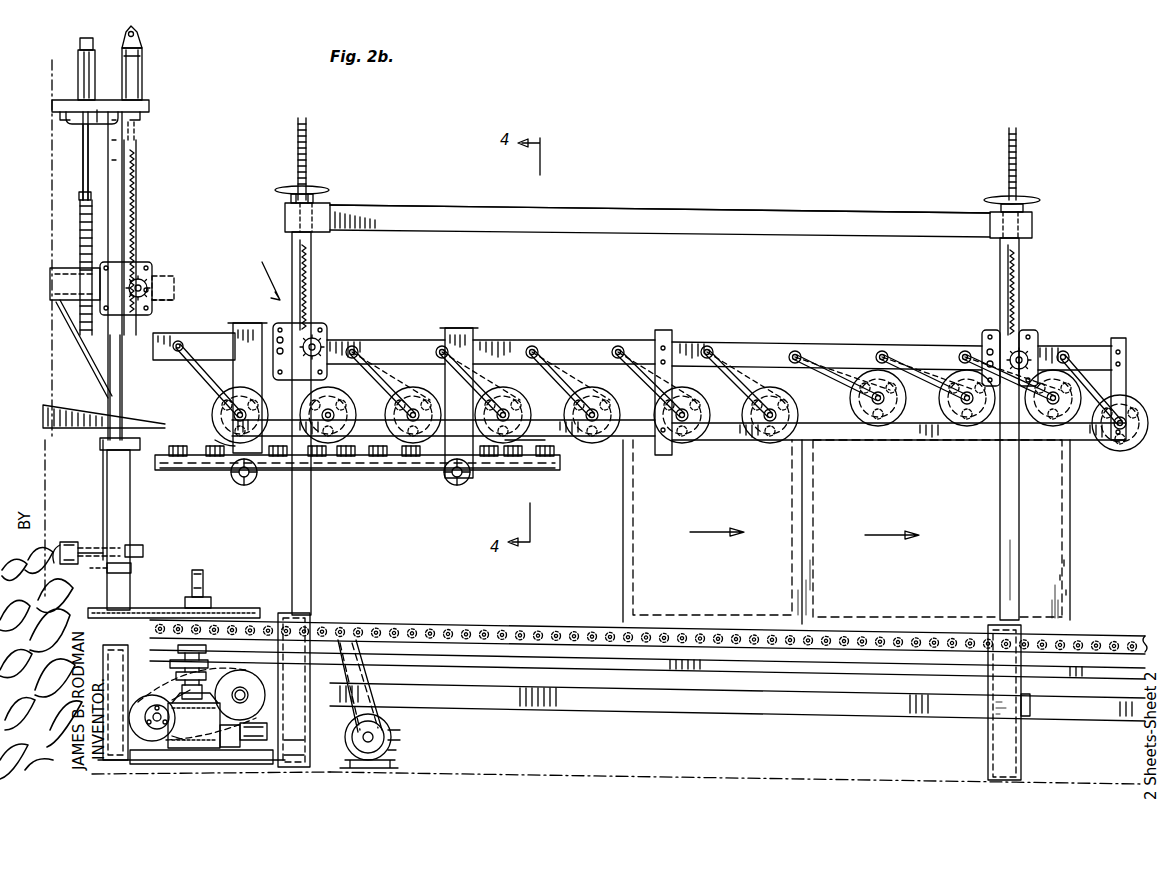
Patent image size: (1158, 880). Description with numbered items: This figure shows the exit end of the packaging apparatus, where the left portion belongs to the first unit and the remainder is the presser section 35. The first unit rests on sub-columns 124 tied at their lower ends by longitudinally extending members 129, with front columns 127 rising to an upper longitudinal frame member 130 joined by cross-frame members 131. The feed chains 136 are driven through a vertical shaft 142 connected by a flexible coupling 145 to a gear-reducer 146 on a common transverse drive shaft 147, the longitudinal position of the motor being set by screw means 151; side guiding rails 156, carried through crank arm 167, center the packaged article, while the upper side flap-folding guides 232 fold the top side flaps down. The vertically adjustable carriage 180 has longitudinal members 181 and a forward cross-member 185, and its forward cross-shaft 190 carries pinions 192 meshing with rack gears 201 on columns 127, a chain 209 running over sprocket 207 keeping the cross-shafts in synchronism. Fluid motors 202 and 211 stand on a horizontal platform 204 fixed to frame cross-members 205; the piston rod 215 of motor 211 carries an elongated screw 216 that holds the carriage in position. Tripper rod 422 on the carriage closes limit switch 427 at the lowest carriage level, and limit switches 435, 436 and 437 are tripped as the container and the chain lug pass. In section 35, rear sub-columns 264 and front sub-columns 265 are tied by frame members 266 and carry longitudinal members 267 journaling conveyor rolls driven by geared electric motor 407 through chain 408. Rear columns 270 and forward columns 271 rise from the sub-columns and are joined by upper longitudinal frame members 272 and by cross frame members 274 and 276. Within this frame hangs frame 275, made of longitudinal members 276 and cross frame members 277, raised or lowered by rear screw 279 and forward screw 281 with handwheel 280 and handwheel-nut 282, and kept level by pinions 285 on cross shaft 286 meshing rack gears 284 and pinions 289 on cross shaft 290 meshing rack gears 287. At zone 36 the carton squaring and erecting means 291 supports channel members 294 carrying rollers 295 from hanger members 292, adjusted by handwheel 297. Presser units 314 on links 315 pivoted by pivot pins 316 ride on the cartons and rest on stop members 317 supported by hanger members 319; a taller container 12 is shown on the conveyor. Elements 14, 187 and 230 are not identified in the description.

The container 12 is at (1065, 478).
The glass sheet edge 14 is at (1066, 520).
The section 35 is at (660, 203).
The zone 36 is at (261, 275).
The sub-columns 124 is at (127, 688).
The front columns 127 is at (107, 480).
The longitudinally extending members 129 is at (100, 750).
The upper longitudinal frame member 130 is at (64, 100).
The cross-frame members 131 is at (152, 111).
The chains 136 is at (168, 638).
The vertical shaft 142 is at (203, 577).
The flexible coupling 145 is at (222, 678).
The gear-reducer 146 is at (200, 748).
The common transverse drive shaft 147 is at (169, 748).
The screw means 151 is at (262, 746).
The side guiding rails 156 is at (100, 555).
The crank arm 167 is at (68, 528).
The carriage 180 is at (68, 250).
The longitudinal members 181 is at (55, 302).
The forward cross-member 185 is at (174, 290).
The guide rod 187 is at (123, 340).
The forward cross-shaft 190 is at (138, 284).
The pinions 192 is at (152, 274).
The rack gears 201 is at (136, 198).
The fluid motor 202 is at (143, 60).
The horizontal platform 204 is at (101, 100).
The frame cross-members 205 is at (88, 122).
The sprocket 207 is at (174, 300).
The chain 209 is at (102, 258).
The fluid motor 211 is at (74, 58).
The piston rod 215 is at (83, 156).
The elongated screw 216 is at (74, 199).
The beam flange 230 is at (100, 446).
The upper side flap-folding guides 232 is at (67, 414).
The rear sub-columns 264 is at (312, 763).
The front sub-columns 265 is at (1024, 740).
The frame members 266 is at (654, 718).
The longitudinal members 267 is at (596, 660).
The rear columns 270 is at (308, 526).
The forward columns 271 is at (1000, 490).
The upper horizontal longitudinal frame members 272 is at (742, 210).
The rear horizontal cross frame member 274 is at (286, 214).
The frame 275 is at (777, 334).
The longitudinal members 276 is at (1037, 230).
The cross frame members 277 is at (240, 324).
The rear screw member 279 is at (295, 151).
The handwheel 280 is at (281, 184).
The forward screw 281 is at (1017, 166).
The handwheel-nut 282 is at (1036, 200).
The rack gear 284 is at (313, 278).
The pinions 285 is at (325, 331).
The cross shaft 286 is at (323, 347).
The rack gears 287 is at (1020, 286).
The pinions 289 is at (1025, 349).
The cross shaft 290 is at (1033, 342).
The carton squaring and erecting means 291 is at (404, 494).
The hanger members 292 is at (224, 443).
The channel members 294 is at (346, 472).
The rollers 295 is at (344, 453).
The handwheel 297 is at (242, 485).
The presser units 314 is at (822, 352).
The links 315 is at (740, 429).
The pivot pin 316 is at (618, 352).
The stop members 317 is at (874, 441).
The hanger members 319 is at (220, 376).
The geared electric motor 407 is at (394, 739).
The chain 408 is at (362, 672).
The tripper rod 422 is at (120, 524).
The limit switch 427 is at (138, 559).
The limit switch 435 is at (224, 616).
The limit switch 436 is at (240, 666).
The limit switch 437 is at (302, 665).